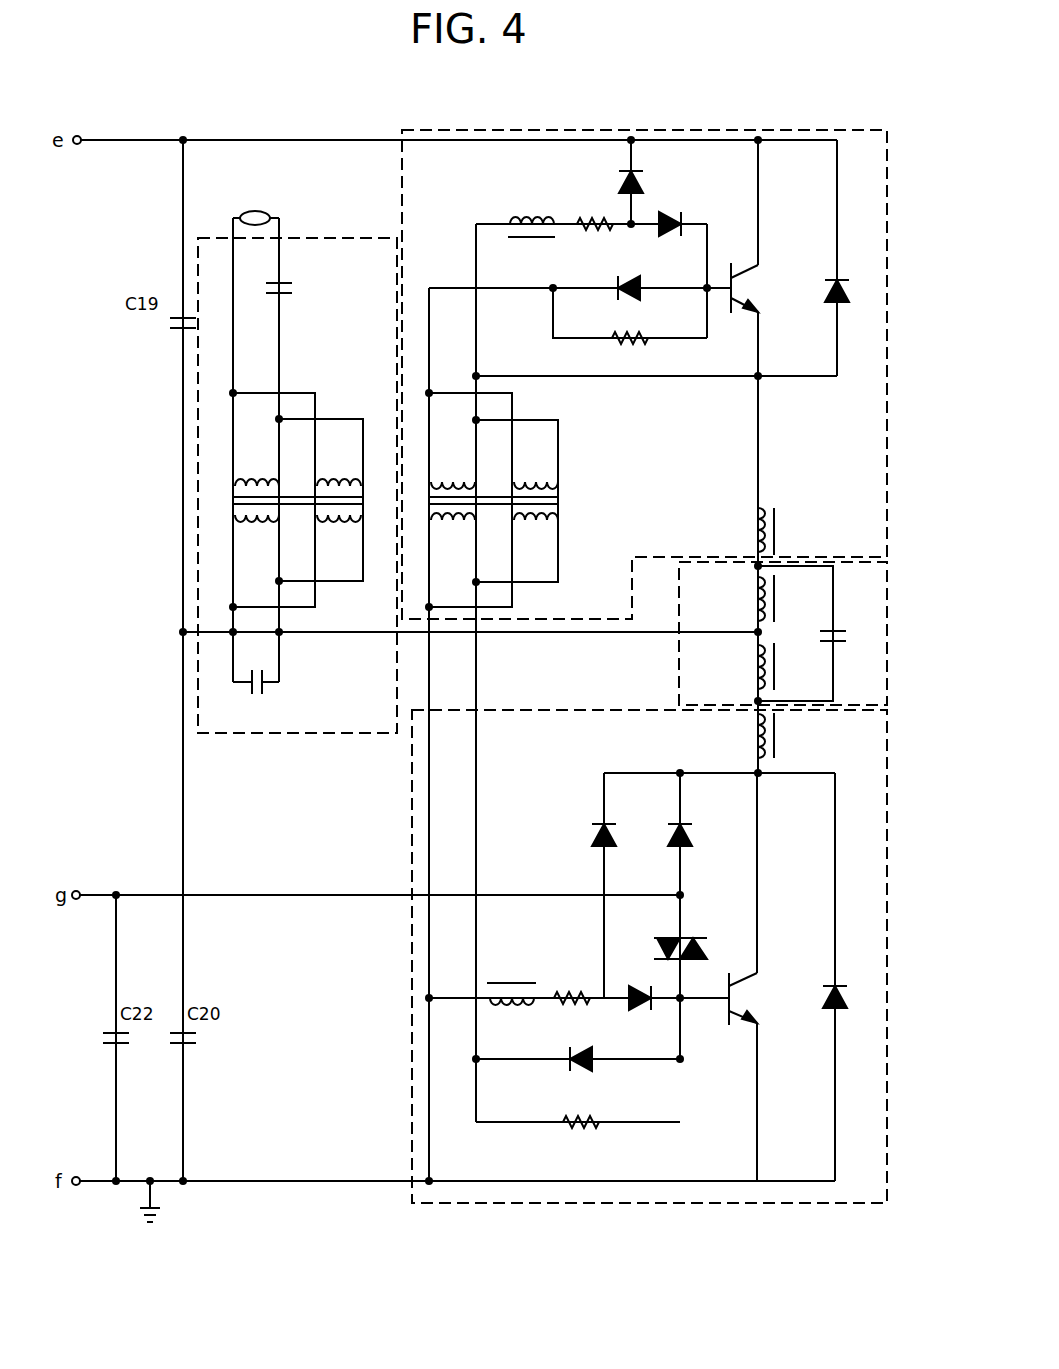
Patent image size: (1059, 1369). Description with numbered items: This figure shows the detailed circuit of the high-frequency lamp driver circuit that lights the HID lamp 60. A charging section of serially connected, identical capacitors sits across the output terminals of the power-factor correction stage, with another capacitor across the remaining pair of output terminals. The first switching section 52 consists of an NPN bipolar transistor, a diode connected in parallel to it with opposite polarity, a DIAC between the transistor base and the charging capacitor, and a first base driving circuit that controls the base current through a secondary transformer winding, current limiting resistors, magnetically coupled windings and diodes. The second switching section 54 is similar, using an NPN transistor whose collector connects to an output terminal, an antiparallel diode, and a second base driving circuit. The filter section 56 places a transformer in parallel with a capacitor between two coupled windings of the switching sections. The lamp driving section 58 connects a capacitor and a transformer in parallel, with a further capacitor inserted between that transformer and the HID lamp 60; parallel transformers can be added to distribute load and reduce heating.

The first switching section 52 is at (412, 842).
The second switching section 54 is at (645, 130).
The filter section 56 is at (679, 675).
The lamp driving section 58 is at (297, 736).
The HID lamp 60 is at (270, 211).